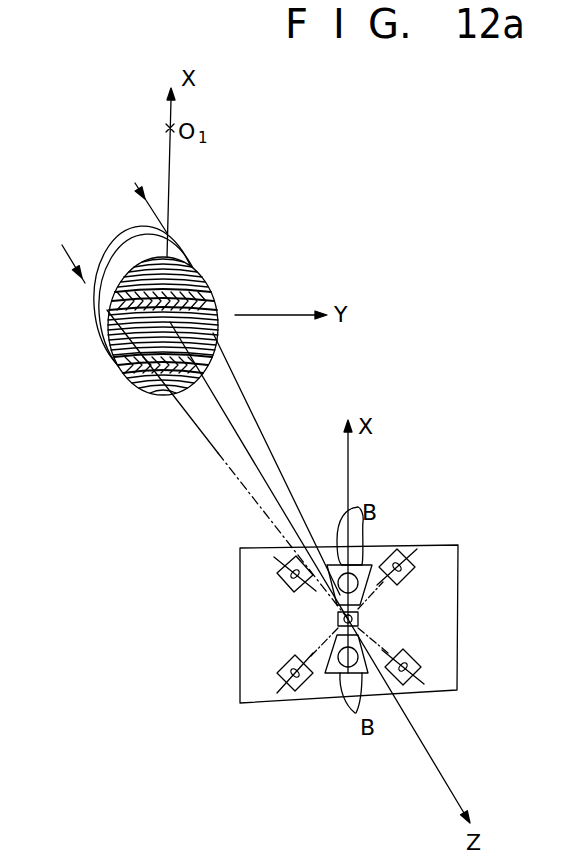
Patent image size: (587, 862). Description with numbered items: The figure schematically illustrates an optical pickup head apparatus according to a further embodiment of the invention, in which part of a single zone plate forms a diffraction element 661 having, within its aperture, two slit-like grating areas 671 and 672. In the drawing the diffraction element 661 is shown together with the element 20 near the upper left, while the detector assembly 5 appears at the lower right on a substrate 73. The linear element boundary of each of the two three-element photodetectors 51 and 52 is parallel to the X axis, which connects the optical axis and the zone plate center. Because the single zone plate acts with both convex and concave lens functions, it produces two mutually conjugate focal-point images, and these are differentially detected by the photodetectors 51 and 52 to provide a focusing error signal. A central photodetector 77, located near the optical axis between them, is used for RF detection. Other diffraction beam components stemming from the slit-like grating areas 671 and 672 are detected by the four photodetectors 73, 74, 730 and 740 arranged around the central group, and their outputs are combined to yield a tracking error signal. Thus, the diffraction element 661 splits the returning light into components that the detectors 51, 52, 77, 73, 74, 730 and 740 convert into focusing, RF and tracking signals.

The objective lens 20 is at (92, 320).
The diffraction element 661 is at (143, 392).
The slit-like grating area 671 is at (203, 283).
The slit-like grating area 672 is at (120, 374).
The photodetector 5 is at (447, 692).
The photodetector 73 is at (440, 570).
The photodetector 74 is at (280, 579).
The photodetector 730 is at (294, 690).
The photodetector 740 is at (423, 661).
The three-element photodetector 51 is at (334, 600).
The three-element photodetector 52 is at (328, 644).
The central photodetector 77 is at (360, 615).